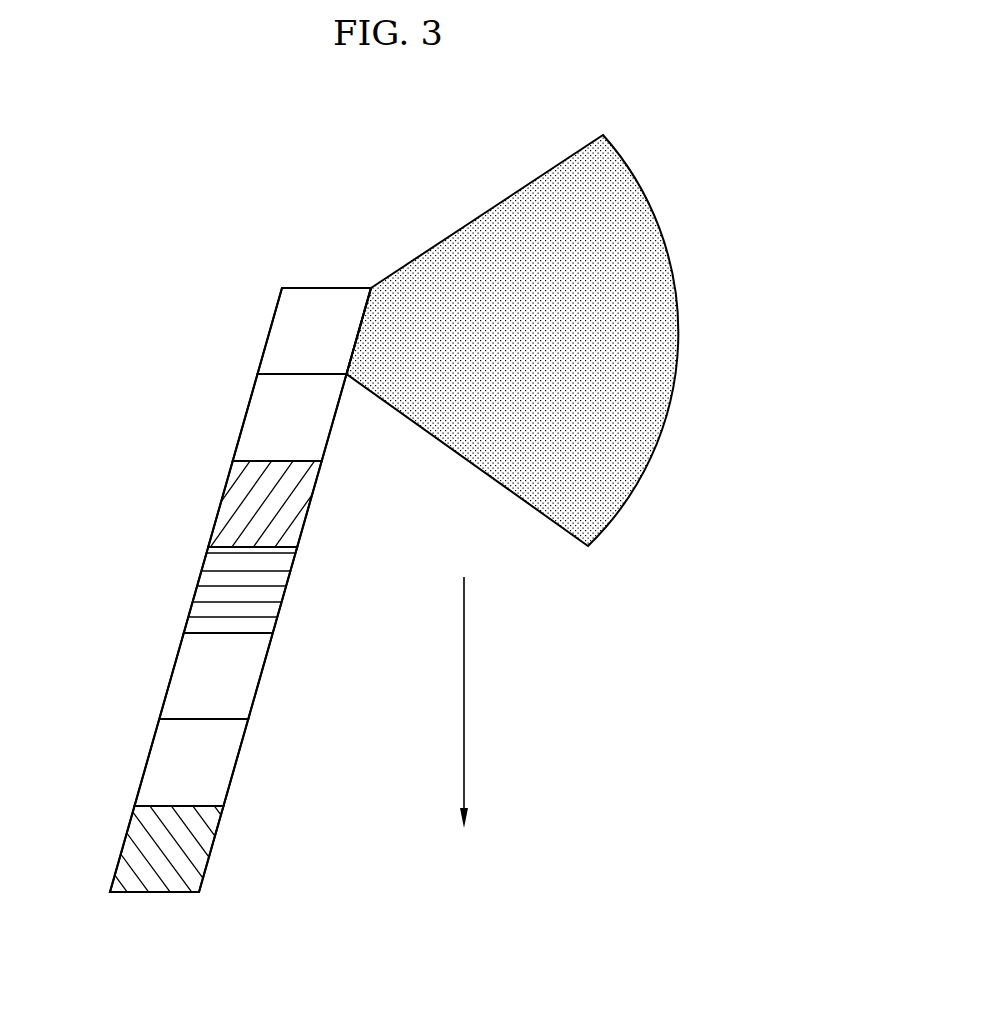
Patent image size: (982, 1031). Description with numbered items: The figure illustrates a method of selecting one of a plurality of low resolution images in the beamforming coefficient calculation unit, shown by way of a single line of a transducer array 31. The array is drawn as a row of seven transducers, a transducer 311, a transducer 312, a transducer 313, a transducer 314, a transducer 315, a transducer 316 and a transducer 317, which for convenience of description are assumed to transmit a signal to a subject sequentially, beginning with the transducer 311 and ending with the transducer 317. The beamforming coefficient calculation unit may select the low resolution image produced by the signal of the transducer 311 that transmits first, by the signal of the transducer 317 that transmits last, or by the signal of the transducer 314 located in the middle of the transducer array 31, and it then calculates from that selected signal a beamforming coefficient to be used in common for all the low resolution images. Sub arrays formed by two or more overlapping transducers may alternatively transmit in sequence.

The transducer array 31 is at (327, 262).
The transducer 311 is at (270, 330).
The transducer 312 is at (246, 416).
The transducer 313 is at (221, 504).
The transducer 314 is at (196, 591).
The transducer 315 is at (171, 678).
The transducer 316 is at (146, 764).
The transducer 317 is at (122, 849).